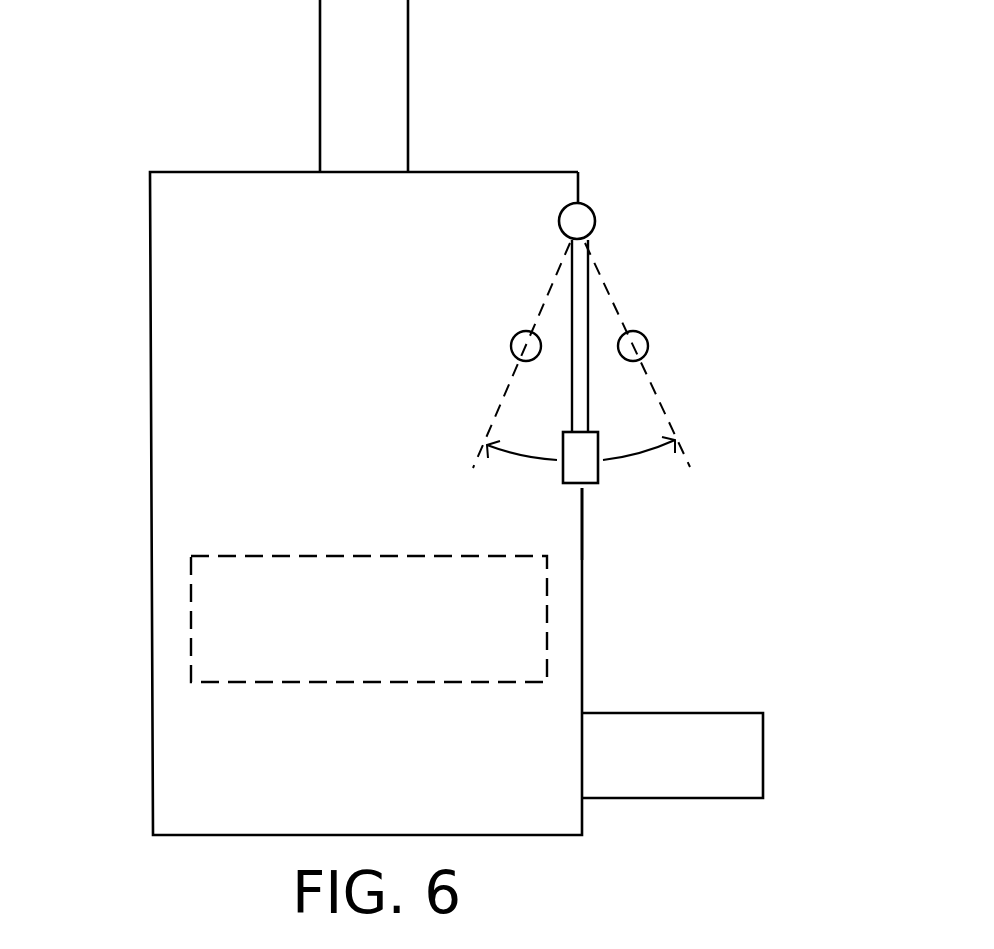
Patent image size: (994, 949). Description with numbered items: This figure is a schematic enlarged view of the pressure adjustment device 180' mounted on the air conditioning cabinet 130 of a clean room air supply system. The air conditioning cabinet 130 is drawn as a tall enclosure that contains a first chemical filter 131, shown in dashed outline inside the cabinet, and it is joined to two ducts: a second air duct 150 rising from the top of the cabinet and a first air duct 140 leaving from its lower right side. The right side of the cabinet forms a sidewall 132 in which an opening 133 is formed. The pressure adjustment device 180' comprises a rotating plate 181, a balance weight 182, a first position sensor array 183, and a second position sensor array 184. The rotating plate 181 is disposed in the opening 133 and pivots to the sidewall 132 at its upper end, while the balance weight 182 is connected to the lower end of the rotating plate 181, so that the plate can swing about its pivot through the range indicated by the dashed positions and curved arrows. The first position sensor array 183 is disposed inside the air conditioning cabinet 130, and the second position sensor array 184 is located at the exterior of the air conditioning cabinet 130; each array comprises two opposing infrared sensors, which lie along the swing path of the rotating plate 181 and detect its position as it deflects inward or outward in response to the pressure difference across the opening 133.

The air conditioning cabinet 130 is at (148, 383).
The first chemical filter 131 is at (210, 620).
The sidewall 132 is at (580, 191).
The opening 133 is at (580, 488).
The first air duct 140 is at (752, 755).
The second air duct 150 is at (400, 85).
The pressure adjustment device 180' is at (647, 340).
The rotating plate 181 is at (585, 290).
The balance weight 182 is at (583, 473).
The first position sensor array 183 is at (510, 345).
The second position sensor array 184 is at (650, 345).